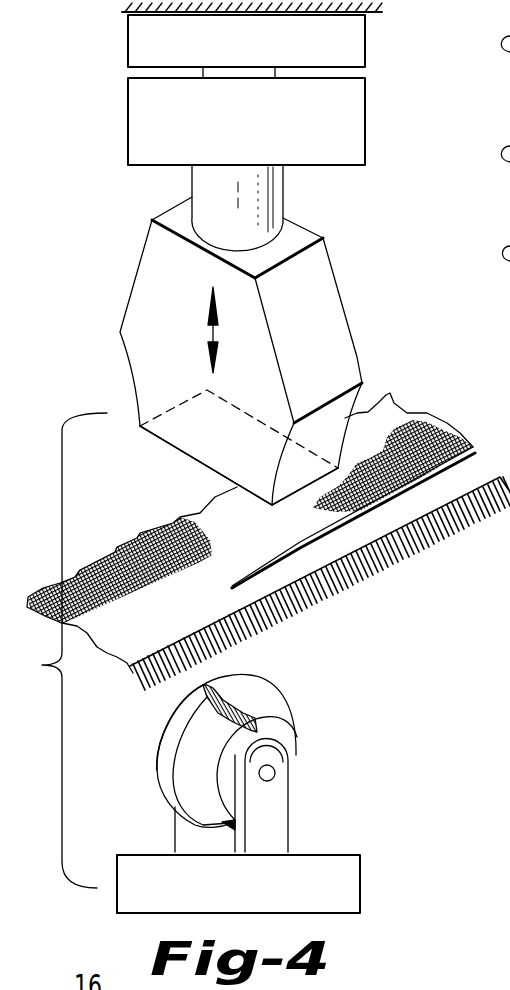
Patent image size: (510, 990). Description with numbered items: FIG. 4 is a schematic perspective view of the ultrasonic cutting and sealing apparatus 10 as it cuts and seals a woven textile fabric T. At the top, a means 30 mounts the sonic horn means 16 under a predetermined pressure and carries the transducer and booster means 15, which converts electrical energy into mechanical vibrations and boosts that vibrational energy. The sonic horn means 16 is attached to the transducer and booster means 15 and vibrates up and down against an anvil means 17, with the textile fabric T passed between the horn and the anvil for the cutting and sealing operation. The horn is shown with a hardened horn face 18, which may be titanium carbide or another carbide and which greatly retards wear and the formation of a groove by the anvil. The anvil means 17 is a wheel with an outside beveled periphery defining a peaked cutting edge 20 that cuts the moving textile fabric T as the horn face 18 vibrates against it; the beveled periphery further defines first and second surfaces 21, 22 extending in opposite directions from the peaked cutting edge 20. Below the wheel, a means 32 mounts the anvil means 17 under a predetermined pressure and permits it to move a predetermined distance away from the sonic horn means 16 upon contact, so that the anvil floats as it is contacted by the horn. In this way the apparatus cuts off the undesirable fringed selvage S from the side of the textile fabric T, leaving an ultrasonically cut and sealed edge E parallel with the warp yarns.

The ultrasonic cutting and sealing apparatus 10 is at (102, 247).
The transducer and booster means 15 is at (112, 133).
The sonic horn means 16 is at (110, 321).
The anvil means 17 is at (318, 748).
The hardened horn face 18 is at (200, 463).
The peaked cutting edge 20 is at (172, 744).
The first surface 21 is at (183, 712).
The second surface 22 is at (270, 700).
The means mounting the sonic horn means under a predetermined pressure 30 is at (112, 48).
The means mounting the anvil means under a predetermined pressure 32 is at (378, 876).
The woven textile fabric T is at (222, 538).
The fringed selvage S is at (388, 527).
The cut and sealed edge E is at (468, 452).